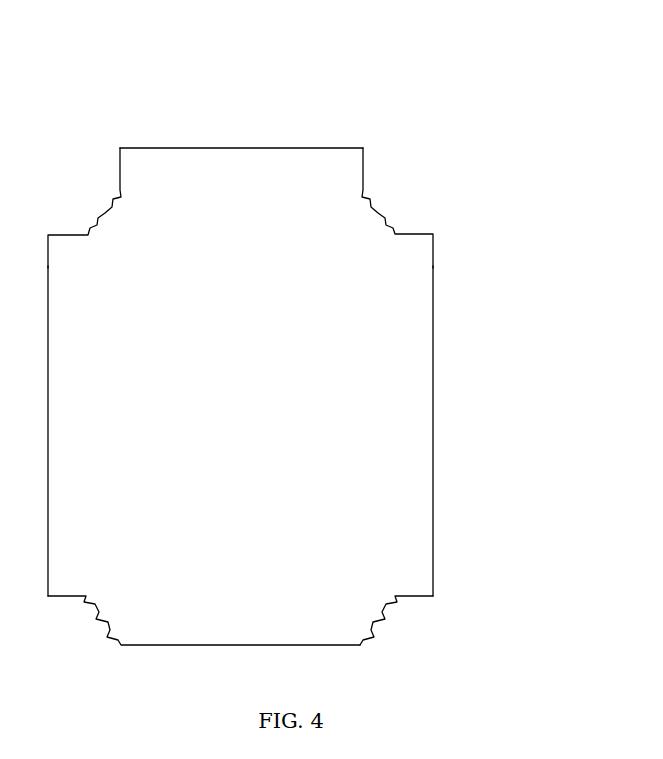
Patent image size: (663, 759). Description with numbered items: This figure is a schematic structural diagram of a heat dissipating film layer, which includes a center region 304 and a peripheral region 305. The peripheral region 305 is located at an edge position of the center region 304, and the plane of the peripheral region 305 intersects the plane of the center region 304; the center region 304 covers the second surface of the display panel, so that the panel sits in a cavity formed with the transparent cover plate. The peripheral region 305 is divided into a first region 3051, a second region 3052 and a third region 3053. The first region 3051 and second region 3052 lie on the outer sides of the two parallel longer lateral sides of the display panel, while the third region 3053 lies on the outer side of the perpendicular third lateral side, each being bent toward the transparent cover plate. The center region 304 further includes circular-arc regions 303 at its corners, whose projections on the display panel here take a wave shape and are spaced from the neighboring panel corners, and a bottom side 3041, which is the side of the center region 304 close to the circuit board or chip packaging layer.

The peripheral region 305 is at (117, 90).
The first region 3051 is at (48, 266).
The second region 3052 is at (432, 265).
The third region 3053 is at (232, 148).
The center region 304 is at (374, 350).
The bottom side 3041 is at (297, 645).
The circular-arc regions 303 is at (396, 603).